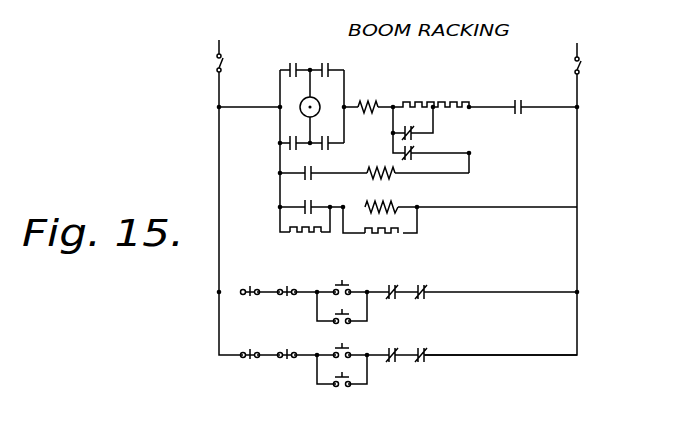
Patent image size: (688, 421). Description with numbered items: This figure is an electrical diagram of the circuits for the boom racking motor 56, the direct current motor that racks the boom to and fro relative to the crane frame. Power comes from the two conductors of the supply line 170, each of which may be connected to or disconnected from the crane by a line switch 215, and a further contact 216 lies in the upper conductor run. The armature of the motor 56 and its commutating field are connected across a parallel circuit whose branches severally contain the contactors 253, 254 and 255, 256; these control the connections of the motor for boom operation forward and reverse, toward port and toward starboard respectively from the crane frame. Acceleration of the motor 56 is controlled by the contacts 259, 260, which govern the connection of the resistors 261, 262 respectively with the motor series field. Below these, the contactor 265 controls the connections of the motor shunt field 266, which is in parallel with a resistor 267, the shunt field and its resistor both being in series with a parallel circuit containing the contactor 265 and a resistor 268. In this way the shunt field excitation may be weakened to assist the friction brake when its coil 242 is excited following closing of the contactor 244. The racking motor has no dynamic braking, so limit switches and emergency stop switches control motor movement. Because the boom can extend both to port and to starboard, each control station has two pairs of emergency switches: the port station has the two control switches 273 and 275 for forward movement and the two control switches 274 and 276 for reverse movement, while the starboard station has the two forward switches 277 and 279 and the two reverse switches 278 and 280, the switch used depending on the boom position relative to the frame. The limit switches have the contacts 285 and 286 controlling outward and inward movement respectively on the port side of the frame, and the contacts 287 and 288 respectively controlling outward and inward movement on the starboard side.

The conductors of the supply line 170 is at (579, 47).
The line switches 215 is at (580, 66).
The contact 216 is at (520, 100).
The contactor 253 is at (289, 64).
The contactor 254 is at (329, 63).
The contactor 255 is at (291, 150).
The contactor 256 is at (328, 150).
The boom racking motor 56 is at (320, 110).
The contact 259 is at (420, 118).
The contact 260 is at (411, 152).
The resistor 261 is at (410, 102).
The resistor 262 is at (448, 102).
The coil 242 is at (367, 170).
The contactor 244 is at (304, 177).
The contactor 265 is at (318, 185).
The shunt field 266 is at (390, 202).
The resistor 267 is at (383, 238).
The resistor 268 is at (298, 237).
The control switch 273 is at (343, 280).
The control switch 274 is at (287, 297).
The control switch 275 is at (249, 360).
The control switch 276 is at (342, 388).
The forward switch 277 is at (249, 297).
The reverse switch 278 is at (342, 312).
The forward switch 279 is at (343, 343).
The reverse switch 280 is at (287, 360).
The limit switch contact 285 is at (392, 284).
The limit switch contact 286 is at (421, 285).
The limit switch contact 287 is at (392, 347).
The limit switch contact 288 is at (421, 348).